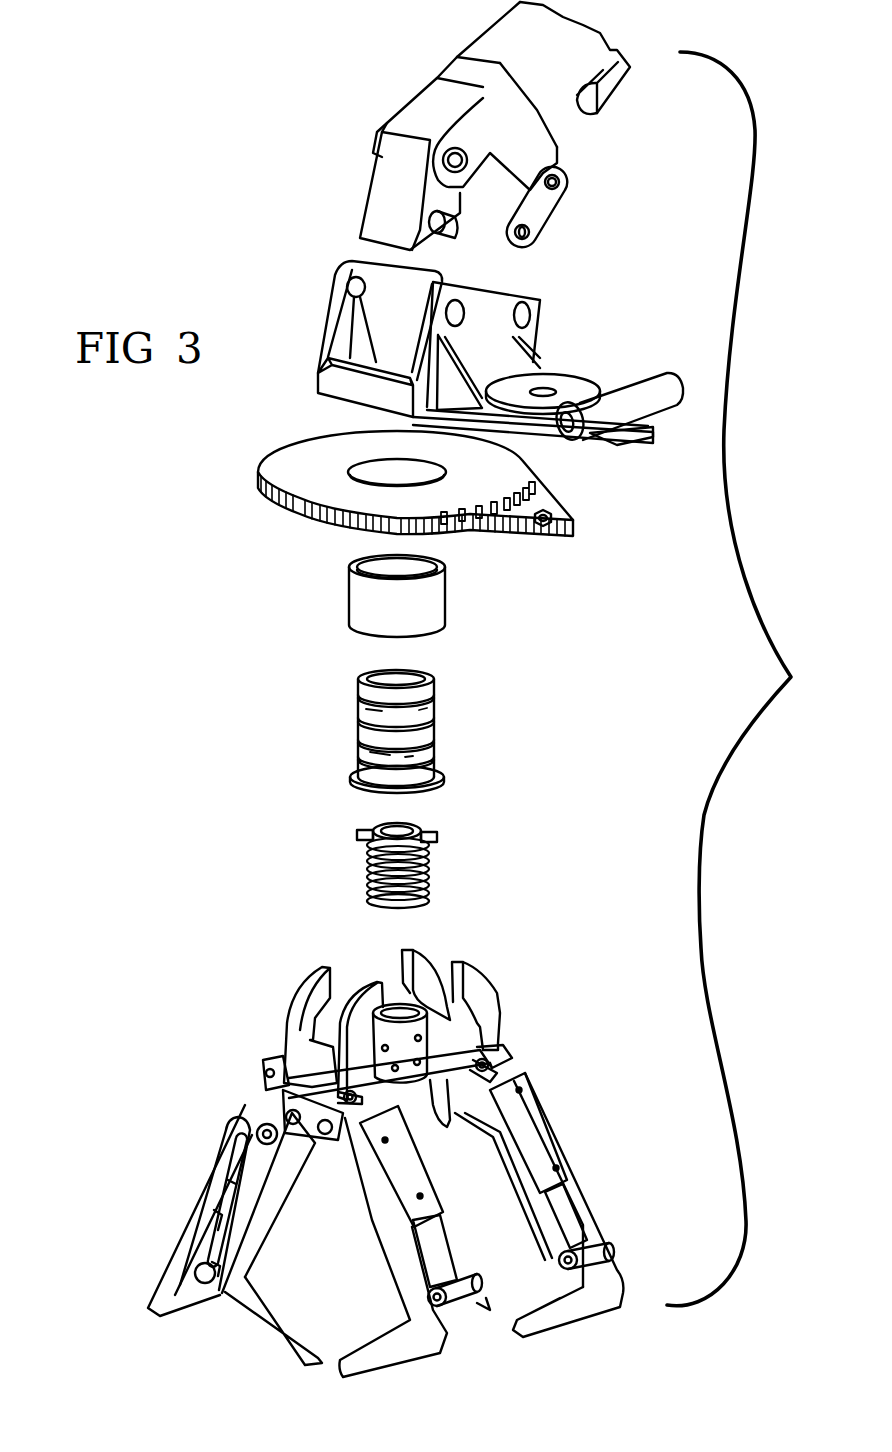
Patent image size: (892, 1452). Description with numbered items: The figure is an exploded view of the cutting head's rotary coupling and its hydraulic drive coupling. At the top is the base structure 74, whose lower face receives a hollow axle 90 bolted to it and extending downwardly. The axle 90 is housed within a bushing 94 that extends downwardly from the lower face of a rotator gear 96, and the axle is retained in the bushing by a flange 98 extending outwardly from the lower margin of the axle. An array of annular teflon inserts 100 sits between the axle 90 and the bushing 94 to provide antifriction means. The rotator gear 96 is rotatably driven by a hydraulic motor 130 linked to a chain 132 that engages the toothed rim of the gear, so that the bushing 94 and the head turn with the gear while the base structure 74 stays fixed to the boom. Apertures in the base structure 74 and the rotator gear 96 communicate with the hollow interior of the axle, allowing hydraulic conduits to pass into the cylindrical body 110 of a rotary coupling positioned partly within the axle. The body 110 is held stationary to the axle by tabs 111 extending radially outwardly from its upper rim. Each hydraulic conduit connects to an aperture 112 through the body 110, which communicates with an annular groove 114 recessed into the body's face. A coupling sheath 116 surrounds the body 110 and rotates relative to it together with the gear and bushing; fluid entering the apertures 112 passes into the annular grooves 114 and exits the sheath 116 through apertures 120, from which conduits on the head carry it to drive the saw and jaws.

The base structure 74 is at (355, 392).
The hydraulic motor 130 is at (633, 396).
The rotator gear 96 is at (322, 487).
The chain 132 is at (555, 546).
The bushing 94 is at (363, 600).
The hollow axle 90 is at (396, 739).
The annular teflon inserts 100 is at (433, 743).
The flange 98 is at (367, 783).
The cylindrical body 110 is at (399, 869).
The tabs 111 is at (432, 833).
The aperture 112 is at (377, 827).
The annular groove 114 is at (383, 907).
The apertures 120 is at (500, 1035).
The coupling sheath 116 is at (422, 1039).